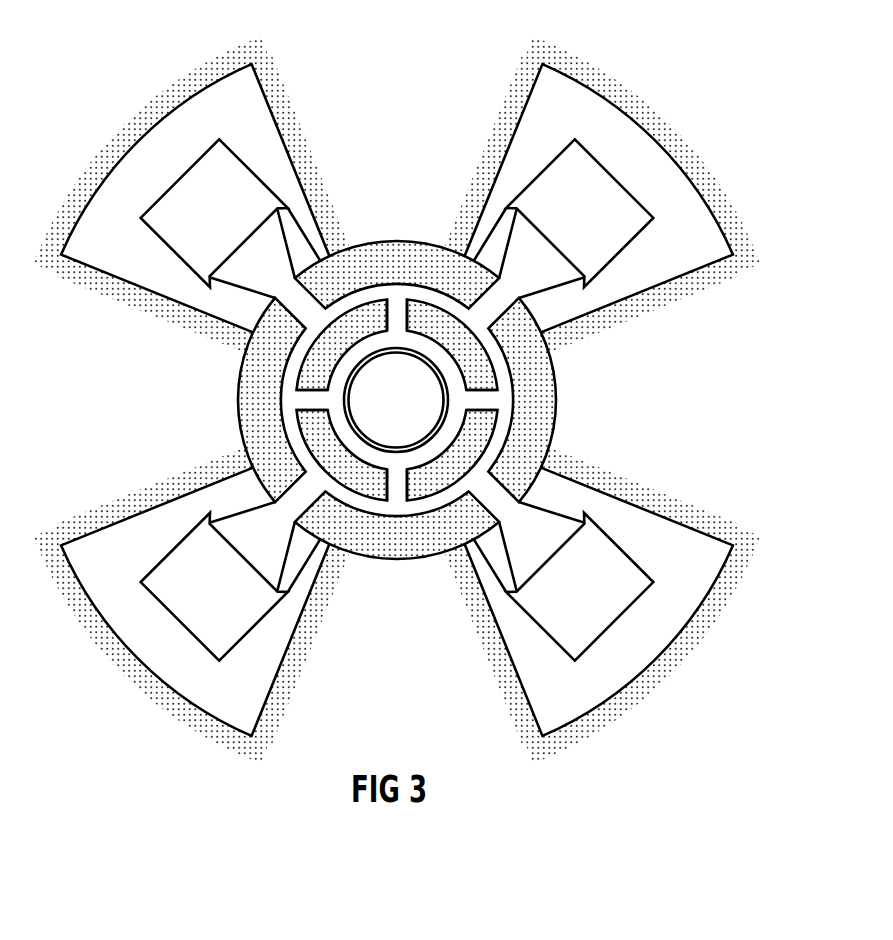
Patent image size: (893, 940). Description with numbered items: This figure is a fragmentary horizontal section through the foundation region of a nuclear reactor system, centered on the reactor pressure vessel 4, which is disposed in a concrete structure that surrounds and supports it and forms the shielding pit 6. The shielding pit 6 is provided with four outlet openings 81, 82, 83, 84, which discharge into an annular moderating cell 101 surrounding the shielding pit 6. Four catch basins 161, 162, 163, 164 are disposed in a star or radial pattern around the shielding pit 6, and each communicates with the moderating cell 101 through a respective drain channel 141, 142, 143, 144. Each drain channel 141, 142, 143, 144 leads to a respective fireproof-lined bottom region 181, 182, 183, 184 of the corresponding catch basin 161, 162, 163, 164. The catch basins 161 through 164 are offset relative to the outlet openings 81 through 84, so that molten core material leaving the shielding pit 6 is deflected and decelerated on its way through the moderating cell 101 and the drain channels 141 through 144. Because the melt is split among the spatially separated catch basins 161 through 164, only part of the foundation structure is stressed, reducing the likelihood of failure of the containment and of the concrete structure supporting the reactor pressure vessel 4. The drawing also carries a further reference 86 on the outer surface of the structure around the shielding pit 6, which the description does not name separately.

The reactor pressure vessel 4 is at (386, 411).
The shielding pit 6 is at (396, 400).
The outlet opening 81 is at (398, 298).
The outlet opening 82 is at (484, 403).
The outlet opening 83 is at (399, 495).
The outlet opening 84 is at (310, 405).
The outer surface of yoke ring 86 is at (244, 420).
The moderating cell 101 is at (423, 510).
The drain channel 141 is at (302, 192).
The drain channel 142 is at (470, 215).
The drain channel 143 is at (541, 472).
The drain channel 144 is at (300, 567).
The catch basin 161 is at (265, 150).
The catch basin 162 is at (626, 150).
The catch basin 163 is at (647, 637).
The catch basin 164 is at (140, 637).
The fireproof-lined bottom region 181 is at (219, 153).
The fireproof-lined bottom region 182 is at (566, 155).
The fireproof-lined bottom region 183 is at (620, 568).
The fireproof-lined bottom region 184 is at (262, 640).